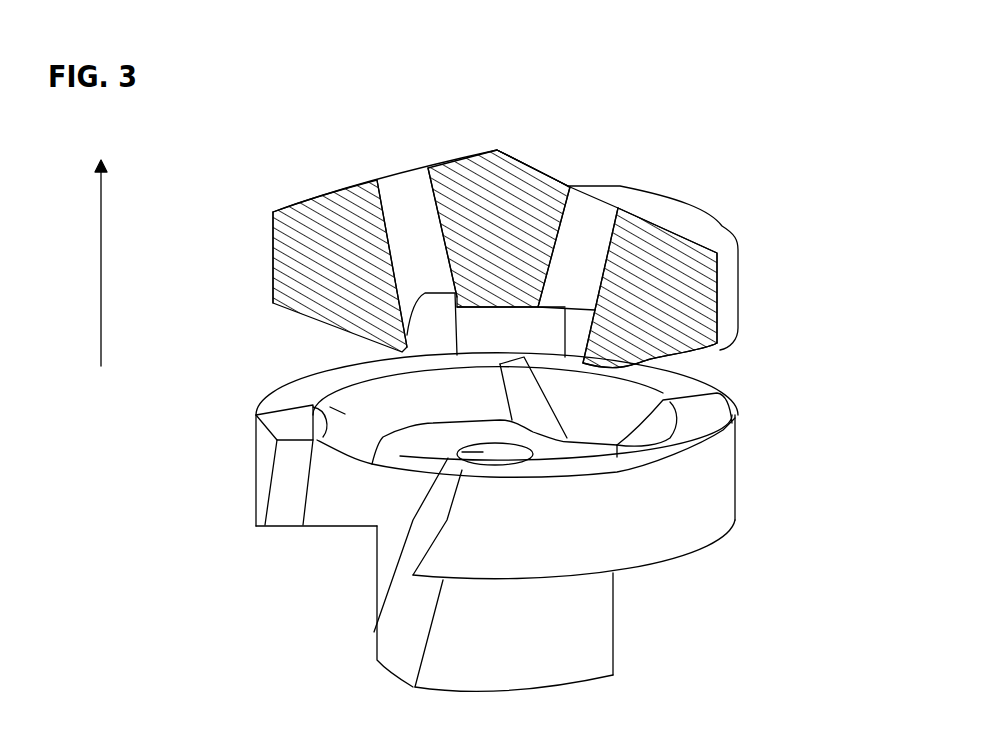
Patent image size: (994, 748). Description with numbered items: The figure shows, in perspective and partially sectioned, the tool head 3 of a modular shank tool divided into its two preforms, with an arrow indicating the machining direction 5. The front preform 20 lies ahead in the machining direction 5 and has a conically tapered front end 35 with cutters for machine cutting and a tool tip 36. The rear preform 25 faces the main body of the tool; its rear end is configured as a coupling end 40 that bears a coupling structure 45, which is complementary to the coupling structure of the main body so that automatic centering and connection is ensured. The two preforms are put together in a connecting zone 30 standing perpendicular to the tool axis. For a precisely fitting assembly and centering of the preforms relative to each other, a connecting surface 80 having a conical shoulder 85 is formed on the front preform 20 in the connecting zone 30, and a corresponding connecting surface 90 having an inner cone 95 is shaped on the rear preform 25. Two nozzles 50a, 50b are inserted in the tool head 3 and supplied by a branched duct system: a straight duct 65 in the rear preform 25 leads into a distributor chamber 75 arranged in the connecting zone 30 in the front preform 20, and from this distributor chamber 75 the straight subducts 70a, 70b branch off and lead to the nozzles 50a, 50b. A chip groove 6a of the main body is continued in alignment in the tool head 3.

The tool head 3 is at (733, 127).
The machining direction 5 is at (101, 252).
The chip groove 6a is at (336, 503).
The front preform 20 is at (741, 257).
The rear preform 25 is at (735, 493).
The connecting zone 30 is at (712, 446).
The front end 35 is at (533, 140).
The tool tip 36 is at (498, 148).
The coupling end 40 is at (621, 680).
The coupling structure 45 is at (612, 607).
The nozzle 50a is at (405, 180).
The nozzle 50b is at (595, 190).
The straight duct 65 is at (374, 632).
The subduct 70a is at (390, 188).
The subduct 70b is at (606, 202).
The distributor chamber 75 is at (273, 283).
The connecting surface 80 is at (690, 350).
The conical shoulder 85 is at (485, 327).
The connecting surface 90 is at (253, 427).
The inner cone 95 is at (272, 422).